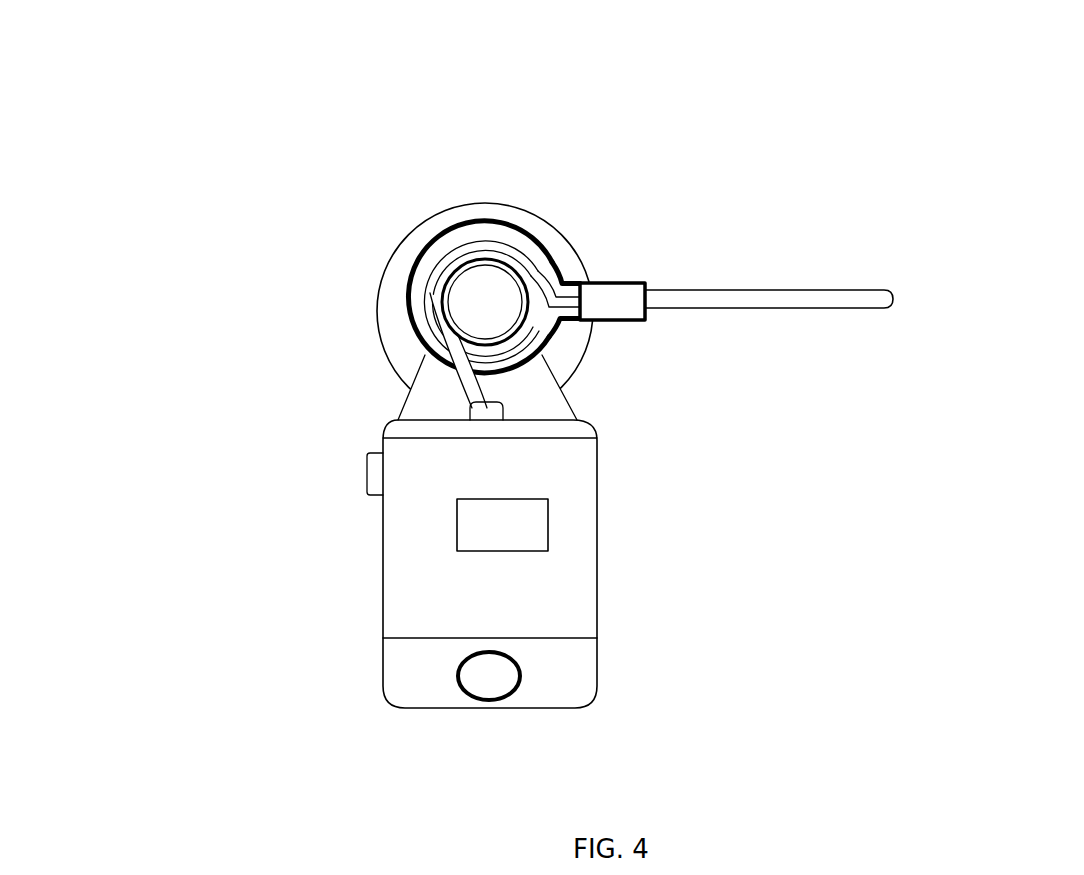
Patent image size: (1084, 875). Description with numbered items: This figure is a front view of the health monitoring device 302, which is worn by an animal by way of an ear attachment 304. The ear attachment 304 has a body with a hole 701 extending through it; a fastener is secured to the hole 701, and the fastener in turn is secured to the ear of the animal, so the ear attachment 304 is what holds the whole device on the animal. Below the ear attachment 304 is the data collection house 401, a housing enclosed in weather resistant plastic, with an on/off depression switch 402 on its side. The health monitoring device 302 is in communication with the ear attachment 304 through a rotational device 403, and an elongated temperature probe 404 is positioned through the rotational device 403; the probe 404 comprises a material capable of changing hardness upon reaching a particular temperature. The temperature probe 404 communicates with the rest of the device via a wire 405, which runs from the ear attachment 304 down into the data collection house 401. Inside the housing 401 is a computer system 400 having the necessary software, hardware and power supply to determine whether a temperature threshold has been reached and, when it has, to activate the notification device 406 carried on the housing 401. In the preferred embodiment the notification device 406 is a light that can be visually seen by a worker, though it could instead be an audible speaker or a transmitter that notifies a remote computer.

The health monitoring device 302 is at (188, 80).
The ear attachment 304 is at (553, 225).
The computer system 400 is at (548, 512).
The data collection house 401 is at (382, 543).
The on/off depression switch 402 is at (367, 472).
The rotational device 403 is at (620, 282).
The temperature probe 404 is at (785, 289).
The wire 405 is at (466, 386).
The notification device 406 is at (493, 653).
The hole 701 is at (450, 281).